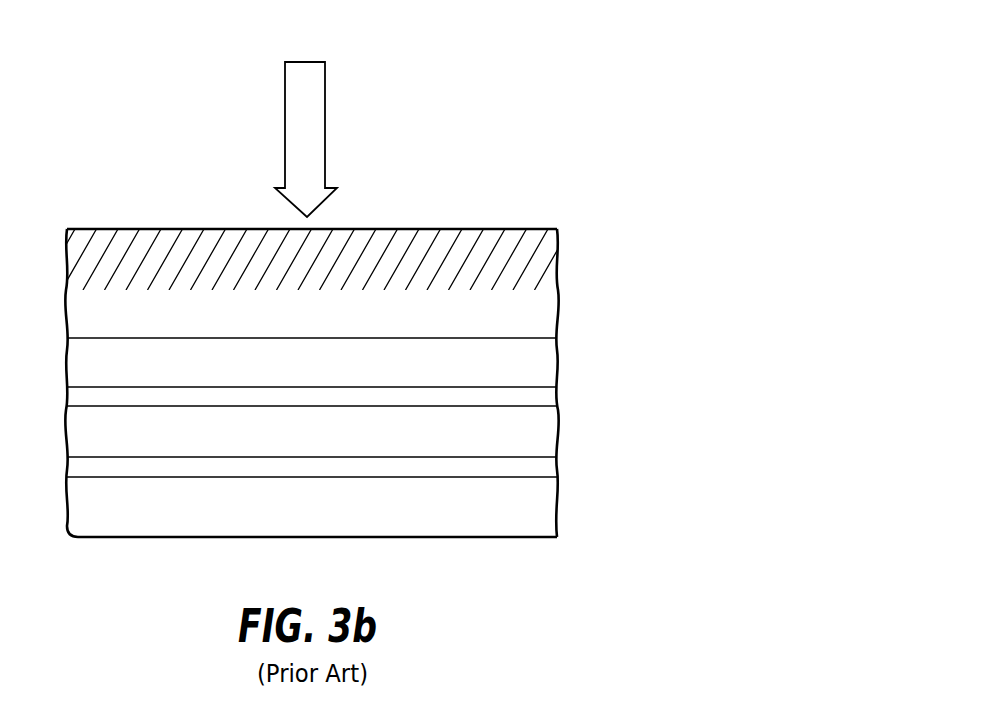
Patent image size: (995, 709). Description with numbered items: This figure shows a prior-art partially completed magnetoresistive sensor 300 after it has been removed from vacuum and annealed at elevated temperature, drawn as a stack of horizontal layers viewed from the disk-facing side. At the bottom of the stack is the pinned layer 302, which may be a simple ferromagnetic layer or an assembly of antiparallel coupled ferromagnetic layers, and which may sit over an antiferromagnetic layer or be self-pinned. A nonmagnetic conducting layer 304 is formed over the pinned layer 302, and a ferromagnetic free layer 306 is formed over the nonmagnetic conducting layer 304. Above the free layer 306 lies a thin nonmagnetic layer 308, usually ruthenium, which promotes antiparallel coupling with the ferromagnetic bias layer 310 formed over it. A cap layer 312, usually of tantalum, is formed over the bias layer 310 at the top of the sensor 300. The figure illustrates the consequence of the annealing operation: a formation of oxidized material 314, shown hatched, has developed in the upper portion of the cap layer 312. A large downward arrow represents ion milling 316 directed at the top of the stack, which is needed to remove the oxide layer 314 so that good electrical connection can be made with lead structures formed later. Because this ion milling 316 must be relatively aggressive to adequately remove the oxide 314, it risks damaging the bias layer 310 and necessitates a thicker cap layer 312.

The magnetoresistive sensor 300 is at (346, 306).
The pinned layer 302 is at (556, 520).
The nonmagnetic conducting layer 304 is at (550, 467).
The ferromagnetic free layer 306 is at (550, 433).
The thin nonmagnetic layer 308 is at (553, 400).
The ferromagnetic bias layer 310 is at (550, 363).
The cap layer 312 is at (550, 317).
The oxidized material 314 is at (548, 254).
The ion milling 316 is at (325, 112).